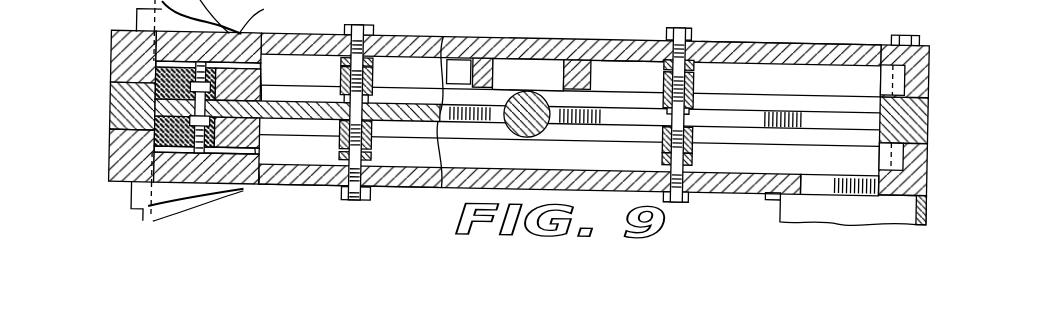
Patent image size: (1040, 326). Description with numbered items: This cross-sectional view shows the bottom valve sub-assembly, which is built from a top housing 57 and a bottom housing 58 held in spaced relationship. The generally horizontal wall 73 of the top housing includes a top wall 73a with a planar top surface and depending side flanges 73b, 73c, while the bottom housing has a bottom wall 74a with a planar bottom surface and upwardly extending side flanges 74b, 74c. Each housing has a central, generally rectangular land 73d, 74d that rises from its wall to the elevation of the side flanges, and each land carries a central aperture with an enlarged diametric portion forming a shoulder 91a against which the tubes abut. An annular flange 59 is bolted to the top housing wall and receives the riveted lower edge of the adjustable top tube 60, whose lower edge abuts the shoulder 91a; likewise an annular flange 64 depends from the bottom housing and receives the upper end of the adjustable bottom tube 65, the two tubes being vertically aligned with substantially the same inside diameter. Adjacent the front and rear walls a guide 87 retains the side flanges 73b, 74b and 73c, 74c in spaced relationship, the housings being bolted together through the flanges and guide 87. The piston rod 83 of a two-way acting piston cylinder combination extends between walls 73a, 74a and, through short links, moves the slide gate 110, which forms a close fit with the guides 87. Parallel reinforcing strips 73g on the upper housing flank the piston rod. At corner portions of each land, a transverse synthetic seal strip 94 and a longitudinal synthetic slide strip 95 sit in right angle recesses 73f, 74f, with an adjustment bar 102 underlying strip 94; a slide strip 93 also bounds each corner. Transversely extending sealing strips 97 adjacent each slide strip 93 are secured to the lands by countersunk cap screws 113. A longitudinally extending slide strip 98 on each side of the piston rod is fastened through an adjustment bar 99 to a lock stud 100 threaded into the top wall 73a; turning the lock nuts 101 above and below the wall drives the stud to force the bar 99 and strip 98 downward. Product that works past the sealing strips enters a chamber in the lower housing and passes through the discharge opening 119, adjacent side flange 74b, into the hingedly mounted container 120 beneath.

The top housing 57 is at (932, 42).
The bottom housing 58 is at (917, 145).
The annular flange 59 is at (140, 29).
The adjustable top tube 60 is at (208, 26).
The annular flange 64 is at (135, 204).
The adjustable bottom tube 65 is at (150, 215).
The horizontal wall 73 is at (840, 44).
The top wall 73a is at (768, 48).
The side flange 73b is at (917, 81).
The side flange 73c is at (120, 78).
The land 73d is at (648, 65).
The right angle recess 73f is at (235, 48).
The reinforcing strips 73g is at (585, 87).
The bottom wall 74a is at (743, 189).
The side flange 74b is at (923, 160).
The side flange 74c is at (117, 170).
The land 74d is at (317, 164).
The right angle recess 74f is at (248, 194).
The piston rod 83 is at (545, 137).
The guide 87 is at (110, 111).
The shoulder 91a is at (150, 57).
The slide strip 93 is at (499, 102).
The transverse synthetic seal strip 94 is at (258, 98).
The longitudinal synthetic slide strip 95 is at (140, 133).
The sealing strips 97 is at (725, 103).
The slide strip 98 is at (347, 103).
The adjustment bar 99 is at (372, 75).
The lock stud 100 is at (358, 28).
The lock nuts 101 is at (382, 54).
The adjustment bar 102 is at (248, 78).
The slide gate 110 is at (787, 112).
The countersunk cap screws 113 is at (388, 103).
The discharge opening 119 is at (812, 187).
The container 120 is at (895, 218).